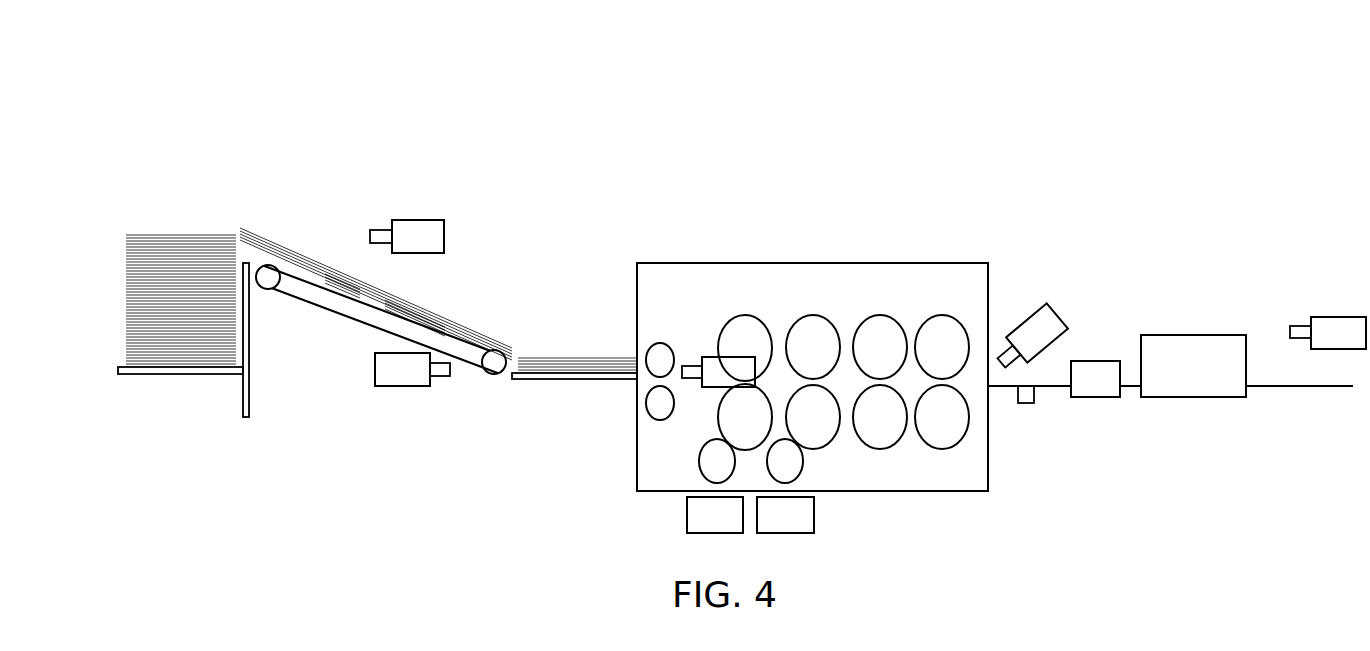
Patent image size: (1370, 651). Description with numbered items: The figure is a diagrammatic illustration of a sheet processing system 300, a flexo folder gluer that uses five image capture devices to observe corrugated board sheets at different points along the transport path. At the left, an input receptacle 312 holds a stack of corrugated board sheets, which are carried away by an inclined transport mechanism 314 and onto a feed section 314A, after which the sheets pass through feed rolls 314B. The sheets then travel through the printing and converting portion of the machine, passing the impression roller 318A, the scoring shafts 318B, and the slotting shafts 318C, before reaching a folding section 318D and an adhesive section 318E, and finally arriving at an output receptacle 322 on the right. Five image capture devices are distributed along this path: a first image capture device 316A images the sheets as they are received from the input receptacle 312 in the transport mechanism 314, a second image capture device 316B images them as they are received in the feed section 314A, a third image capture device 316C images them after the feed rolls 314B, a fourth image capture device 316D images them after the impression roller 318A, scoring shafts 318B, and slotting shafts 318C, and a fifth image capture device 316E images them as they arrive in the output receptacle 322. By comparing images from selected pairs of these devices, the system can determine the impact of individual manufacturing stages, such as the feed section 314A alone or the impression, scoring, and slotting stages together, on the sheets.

The sheet processing system 300 is at (1222, 58).
The input receptacle 312 is at (117, 235).
The transport mechanism 314 is at (338, 333).
The feed section 314A is at (542, 385).
The feed rolls 314B is at (645, 350).
The first image capture device 316A is at (400, 220).
The second image capture device 316B is at (382, 386).
The third image capture device 316C is at (702, 357).
The fourth image capture device 316D is at (1023, 317).
The fifth image capture device 316E is at (1317, 317).
The impression roller 318A is at (732, 315).
The scoring shafts 318B is at (863, 317).
The slotting shafts 318C is at (938, 315).
The folding section 318D is at (1033, 404).
The adhesive section 318E is at (1102, 360).
The output receptacle 322 is at (1167, 335).